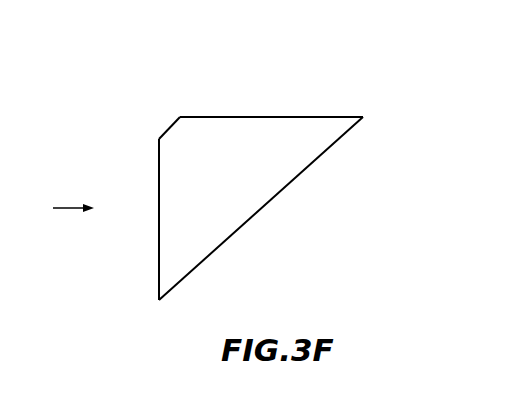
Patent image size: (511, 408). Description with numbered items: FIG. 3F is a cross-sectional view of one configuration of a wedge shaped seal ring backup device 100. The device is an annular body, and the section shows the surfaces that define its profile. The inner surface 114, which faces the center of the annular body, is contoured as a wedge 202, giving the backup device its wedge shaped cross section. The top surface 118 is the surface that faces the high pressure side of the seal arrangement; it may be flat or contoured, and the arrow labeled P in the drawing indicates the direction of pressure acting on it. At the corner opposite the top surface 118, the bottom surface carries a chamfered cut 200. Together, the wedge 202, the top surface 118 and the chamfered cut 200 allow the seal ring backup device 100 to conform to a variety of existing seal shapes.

The seal ring backup device 100 is at (408, 78).
The inner surface 114 is at (271, 79).
The top surface 118 is at (158, 256).
The chamfered cut 200 is at (167, 120).
The wedge 202 is at (243, 225).